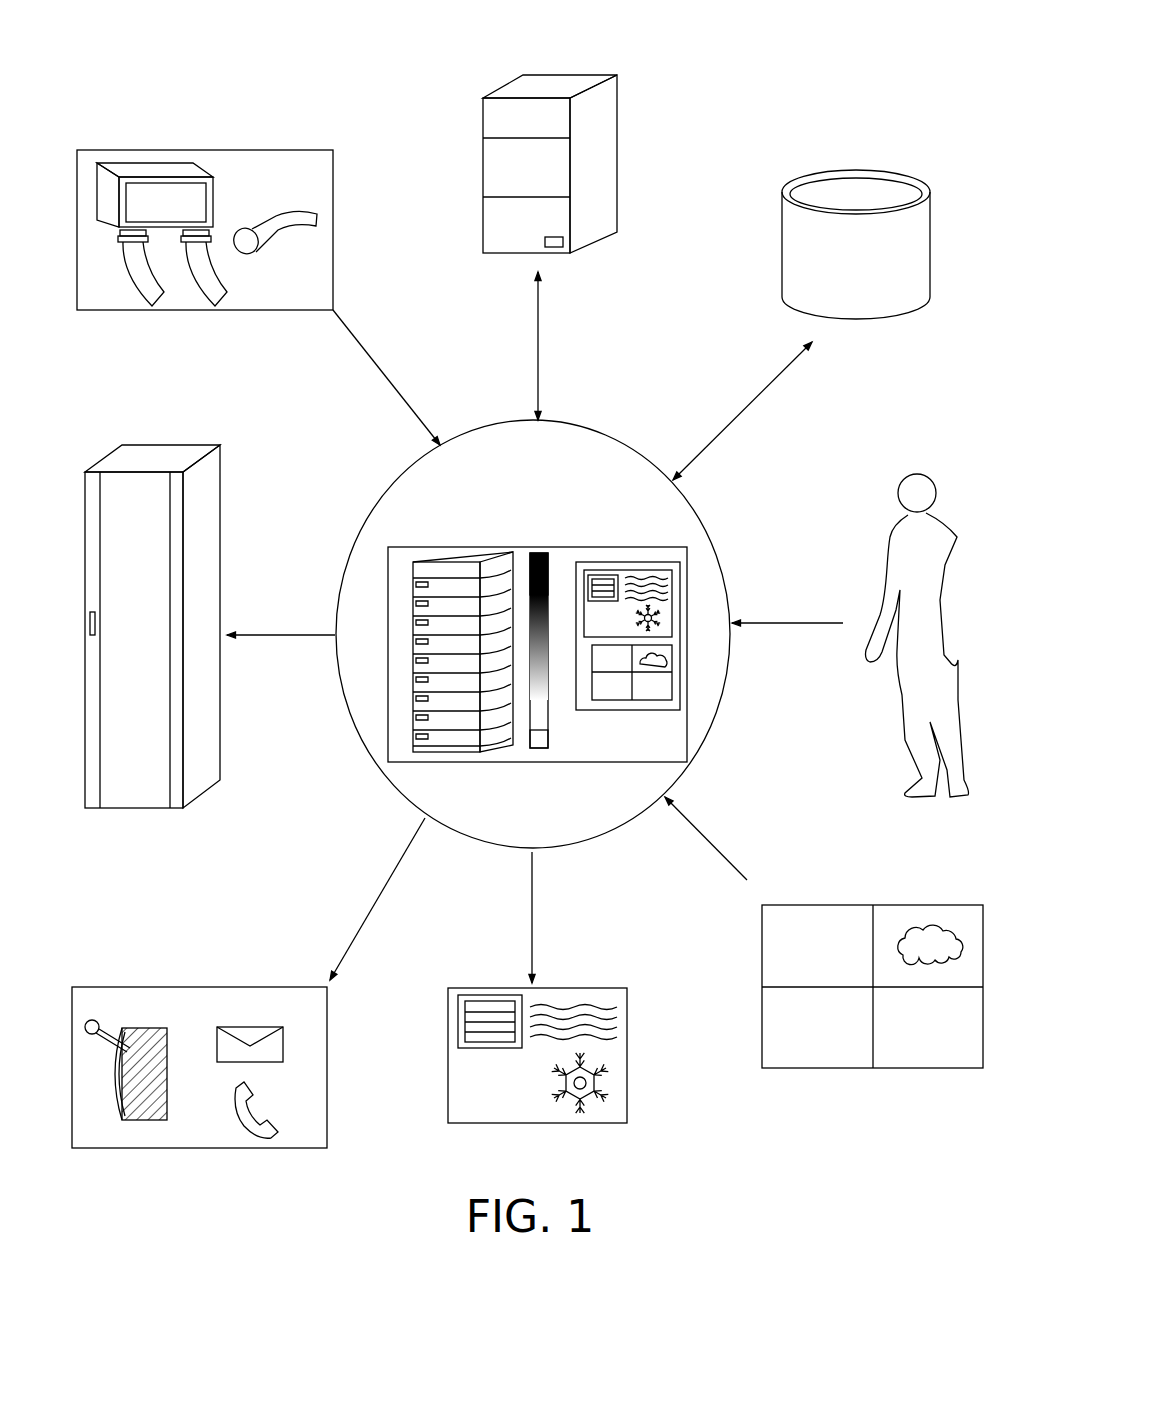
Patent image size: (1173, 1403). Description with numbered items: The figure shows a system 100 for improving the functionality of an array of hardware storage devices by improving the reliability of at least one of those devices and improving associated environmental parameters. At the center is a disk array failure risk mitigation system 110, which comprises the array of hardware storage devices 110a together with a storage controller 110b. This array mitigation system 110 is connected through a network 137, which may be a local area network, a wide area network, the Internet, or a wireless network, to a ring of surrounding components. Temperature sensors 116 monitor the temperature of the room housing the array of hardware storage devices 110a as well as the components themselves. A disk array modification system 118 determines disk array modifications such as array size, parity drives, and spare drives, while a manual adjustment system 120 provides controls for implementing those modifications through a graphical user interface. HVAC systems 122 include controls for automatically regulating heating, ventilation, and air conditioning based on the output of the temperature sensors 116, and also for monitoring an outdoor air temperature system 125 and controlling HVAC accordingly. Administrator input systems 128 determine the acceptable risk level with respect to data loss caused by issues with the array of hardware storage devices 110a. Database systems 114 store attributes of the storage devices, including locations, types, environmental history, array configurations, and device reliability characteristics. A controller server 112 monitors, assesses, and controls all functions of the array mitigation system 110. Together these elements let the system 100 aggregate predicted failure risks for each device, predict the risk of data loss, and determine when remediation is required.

The system 100 is at (360, 88).
The disk array failure risk mitigation system 110 is at (667, 547).
The array of hardware storage devices 110a is at (420, 562).
The storage controller 110b is at (687, 697).
The controller server 112 is at (617, 118).
The database systems 114 is at (807, 242).
The temperature sensors 116 is at (236, 150).
The disk array modification system 118 is at (220, 718).
The manual adjustment system 120 is at (327, 1042).
The HVAC systems 122 is at (565, 988).
The outdoor air temperature system 125 is at (760, 975).
The administrator input systems 128 is at (900, 488).
The network 137 is at (610, 440).